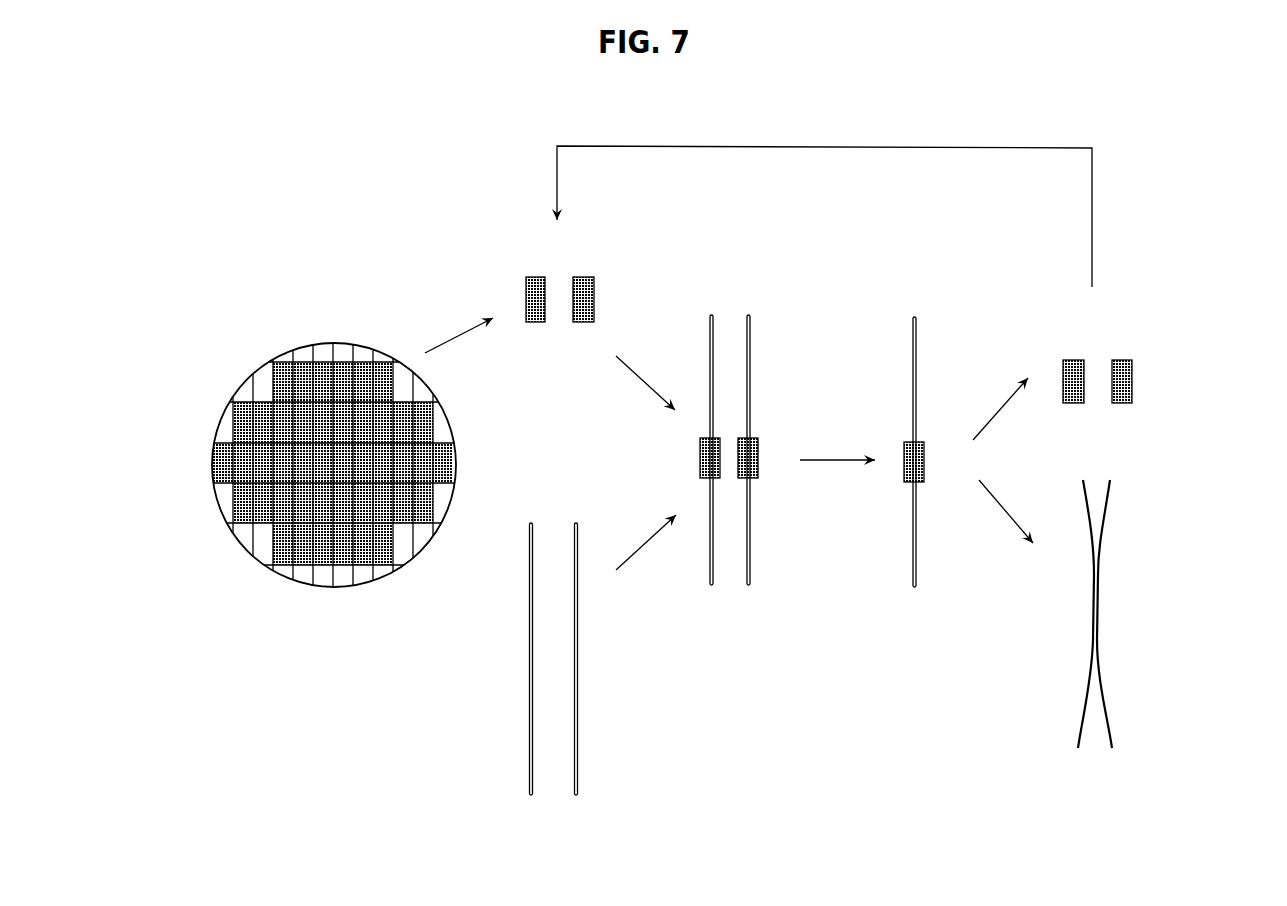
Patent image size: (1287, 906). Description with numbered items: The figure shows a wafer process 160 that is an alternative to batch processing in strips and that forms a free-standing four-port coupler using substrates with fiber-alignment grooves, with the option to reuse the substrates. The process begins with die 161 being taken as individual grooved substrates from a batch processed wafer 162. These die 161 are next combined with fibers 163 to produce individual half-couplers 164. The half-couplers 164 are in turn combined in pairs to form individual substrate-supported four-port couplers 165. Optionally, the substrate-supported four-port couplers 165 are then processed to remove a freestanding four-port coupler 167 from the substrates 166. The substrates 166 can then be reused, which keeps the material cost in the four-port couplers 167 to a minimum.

The wafer process 160 is at (314, 153).
The die 161 is at (510, 263).
The batch processed wafer 162 is at (257, 368).
The fibers 163 is at (490, 652).
The half-couplers 164 is at (735, 272).
The substrate-supported 4-port couplers 165 is at (913, 285).
The substrates 166 is at (1137, 338).
The freestanding 4-port coupler 167 is at (1118, 605).